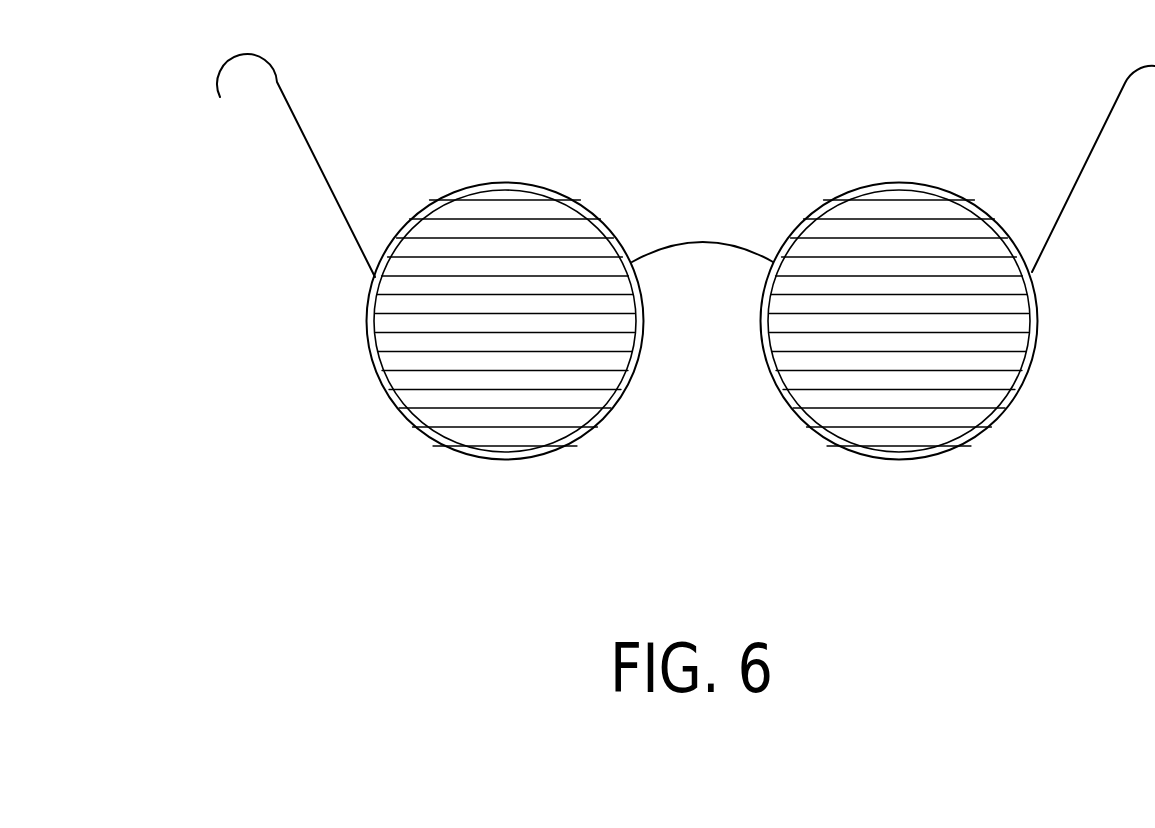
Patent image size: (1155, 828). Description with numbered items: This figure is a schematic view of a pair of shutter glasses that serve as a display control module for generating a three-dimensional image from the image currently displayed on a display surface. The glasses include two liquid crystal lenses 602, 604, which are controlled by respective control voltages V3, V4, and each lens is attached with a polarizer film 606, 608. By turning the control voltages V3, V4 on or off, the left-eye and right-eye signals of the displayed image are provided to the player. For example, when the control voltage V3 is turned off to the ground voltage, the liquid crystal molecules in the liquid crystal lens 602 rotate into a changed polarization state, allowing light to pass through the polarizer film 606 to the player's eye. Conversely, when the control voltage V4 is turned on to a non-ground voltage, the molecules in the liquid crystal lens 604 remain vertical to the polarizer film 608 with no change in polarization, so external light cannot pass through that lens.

The liquid crystal lens 602 is at (503, 459).
The liquid crystal lens 604 is at (895, 459).
The polarizer film 606 is at (387, 322).
The polarizer film 608 is at (1022, 321).
The control voltage V3 is at (513, 166).
The control voltage V4 is at (907, 166).